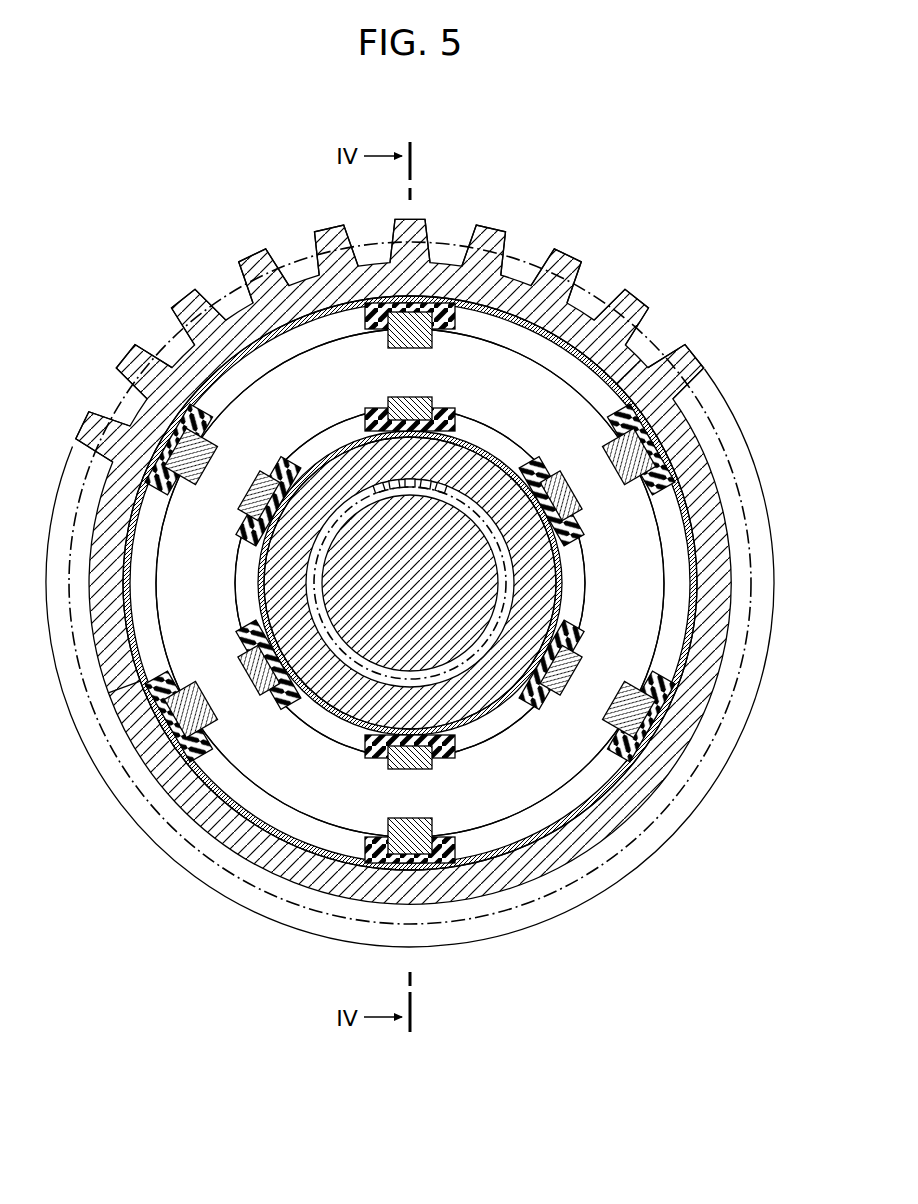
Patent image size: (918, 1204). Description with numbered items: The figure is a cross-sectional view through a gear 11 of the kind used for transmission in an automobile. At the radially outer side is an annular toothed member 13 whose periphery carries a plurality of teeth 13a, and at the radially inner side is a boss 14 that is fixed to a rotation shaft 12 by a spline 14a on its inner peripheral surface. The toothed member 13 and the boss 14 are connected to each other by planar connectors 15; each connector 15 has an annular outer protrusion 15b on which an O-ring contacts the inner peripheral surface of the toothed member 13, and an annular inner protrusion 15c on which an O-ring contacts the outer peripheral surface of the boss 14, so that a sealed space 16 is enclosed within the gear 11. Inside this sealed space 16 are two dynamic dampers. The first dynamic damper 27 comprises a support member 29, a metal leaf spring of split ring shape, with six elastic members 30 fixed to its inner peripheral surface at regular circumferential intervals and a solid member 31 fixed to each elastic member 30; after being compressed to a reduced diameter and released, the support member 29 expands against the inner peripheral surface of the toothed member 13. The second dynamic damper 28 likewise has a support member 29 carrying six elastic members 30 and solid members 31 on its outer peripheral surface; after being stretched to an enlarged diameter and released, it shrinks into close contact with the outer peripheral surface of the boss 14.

The gear 11 is at (680, 318).
The rotation shaft 12 is at (396, 595).
The annular toothed member 13 is at (121, 357).
The teeth 13a is at (320, 232).
The boss 14 is at (328, 452).
The spline 14a is at (464, 446).
The planar connector 15 is at (706, 554).
The annular outer protrusion 15b is at (252, 369).
The annular inner protrusion 15c is at (338, 428).
The sealed space 16 is at (205, 602).
The first dynamic damper 27 is at (357, 314).
The second dynamic damper 28 is at (226, 534).
The support member 29 is at (575, 371).
The elastic member 30 is at (458, 328).
The solid member 31 is at (417, 341).